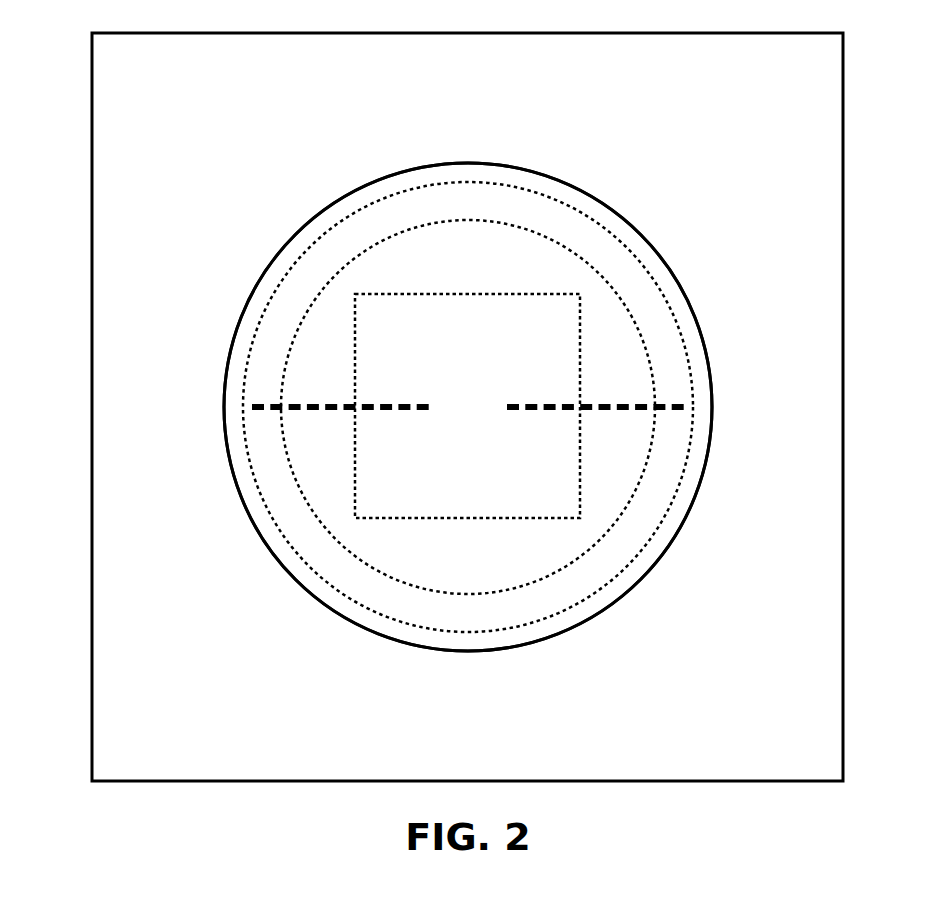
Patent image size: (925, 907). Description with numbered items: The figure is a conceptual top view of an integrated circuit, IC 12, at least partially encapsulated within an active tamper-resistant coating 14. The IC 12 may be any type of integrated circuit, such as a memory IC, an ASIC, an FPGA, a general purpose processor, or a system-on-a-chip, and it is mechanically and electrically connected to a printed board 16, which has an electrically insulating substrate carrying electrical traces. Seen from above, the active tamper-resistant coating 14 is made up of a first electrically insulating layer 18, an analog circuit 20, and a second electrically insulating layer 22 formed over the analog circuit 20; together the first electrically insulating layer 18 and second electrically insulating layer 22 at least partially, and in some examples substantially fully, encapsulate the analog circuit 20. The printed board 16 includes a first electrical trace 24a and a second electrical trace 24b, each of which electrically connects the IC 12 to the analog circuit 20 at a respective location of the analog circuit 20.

The IC 12 is at (355, 368).
The active tamper-resistant coating 14 is at (248, 255).
The printed board 16 is at (92, 108).
The first electrically insulating layer 18 is at (617, 350).
The analog circuit 20 is at (635, 295).
The second electrically insulating layer 22 is at (232, 370).
The first electrical trace 24a is at (303, 408).
The second electrical trace 24b is at (620, 408).